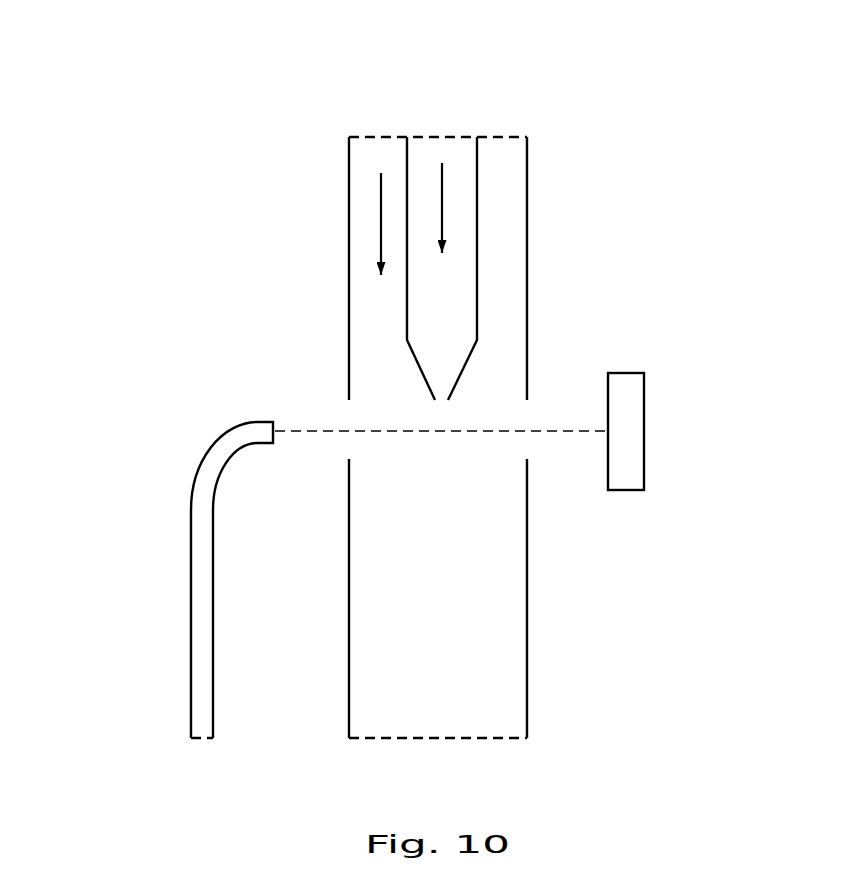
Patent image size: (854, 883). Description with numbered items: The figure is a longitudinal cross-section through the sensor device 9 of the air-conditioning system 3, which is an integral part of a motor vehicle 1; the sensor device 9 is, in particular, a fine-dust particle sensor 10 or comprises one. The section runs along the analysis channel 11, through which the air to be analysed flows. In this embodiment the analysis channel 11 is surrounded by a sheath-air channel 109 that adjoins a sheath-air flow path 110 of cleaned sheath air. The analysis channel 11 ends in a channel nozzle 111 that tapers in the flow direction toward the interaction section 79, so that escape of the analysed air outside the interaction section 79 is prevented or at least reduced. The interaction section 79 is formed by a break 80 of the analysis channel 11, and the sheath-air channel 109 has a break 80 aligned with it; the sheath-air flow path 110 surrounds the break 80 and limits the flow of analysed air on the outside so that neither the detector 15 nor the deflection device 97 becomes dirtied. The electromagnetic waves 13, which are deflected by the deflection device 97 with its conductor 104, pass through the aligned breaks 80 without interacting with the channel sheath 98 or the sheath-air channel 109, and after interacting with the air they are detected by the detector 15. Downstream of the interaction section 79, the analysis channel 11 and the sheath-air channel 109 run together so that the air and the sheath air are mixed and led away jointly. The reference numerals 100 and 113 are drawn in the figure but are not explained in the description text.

The motor vehicle 1 is at (399, 419).
The air-conditioning system 3 is at (399, 381).
The sensor device 9 is at (161, 463).
The fine-dust particle sensor 10 is at (161, 463).
The analysis channel 11 is at (484, 437).
The electromagnetic waves 13 is at (452, 390).
The deposition plane 100 is at (452, 390).
The detector 15 is at (644, 428).
The interaction section 79 is at (349, 412).
The break 80 is at (452, 414).
The deflection device 97 is at (175, 548).
The channel sheath 98 is at (478, 243).
The conductor 104 is at (161, 580).
The sheath-air channel 109 is at (349, 250).
The sheath-air flow path 110 is at (381, 192).
The channel nozzle 111 is at (412, 349).
The nozzle outlet 113 is at (445, 402).